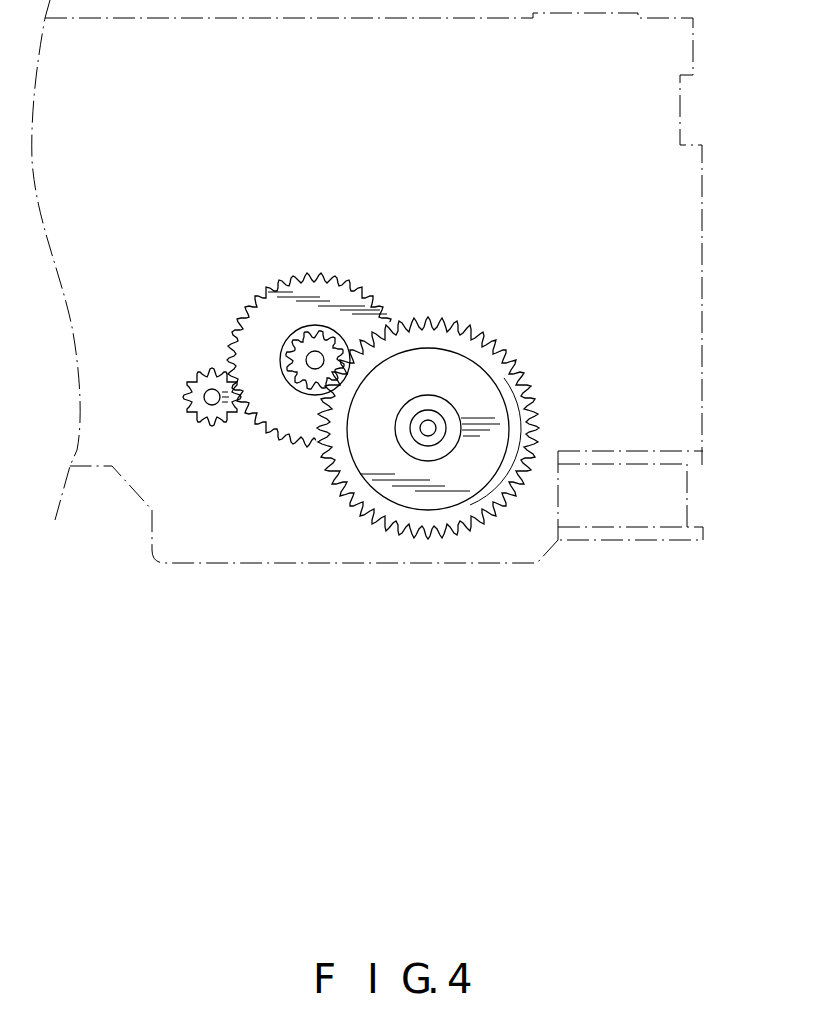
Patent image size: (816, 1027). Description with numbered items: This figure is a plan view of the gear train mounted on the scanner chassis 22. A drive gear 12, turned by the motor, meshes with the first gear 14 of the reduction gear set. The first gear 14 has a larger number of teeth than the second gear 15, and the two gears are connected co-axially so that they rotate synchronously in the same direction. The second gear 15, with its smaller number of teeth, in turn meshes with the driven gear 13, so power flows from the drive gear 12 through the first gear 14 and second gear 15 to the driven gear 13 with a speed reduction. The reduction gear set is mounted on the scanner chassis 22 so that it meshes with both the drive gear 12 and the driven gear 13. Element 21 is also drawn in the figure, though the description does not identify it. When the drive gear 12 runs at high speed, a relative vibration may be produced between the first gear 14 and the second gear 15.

The drive gear 12 is at (192, 412).
The driven gear 13 is at (435, 540).
The first gear 14 is at (265, 290).
The second gear 15 is at (323, 333).
The gear shaft 21 is at (293, 387).
The scanner chassis 22 is at (706, 300).